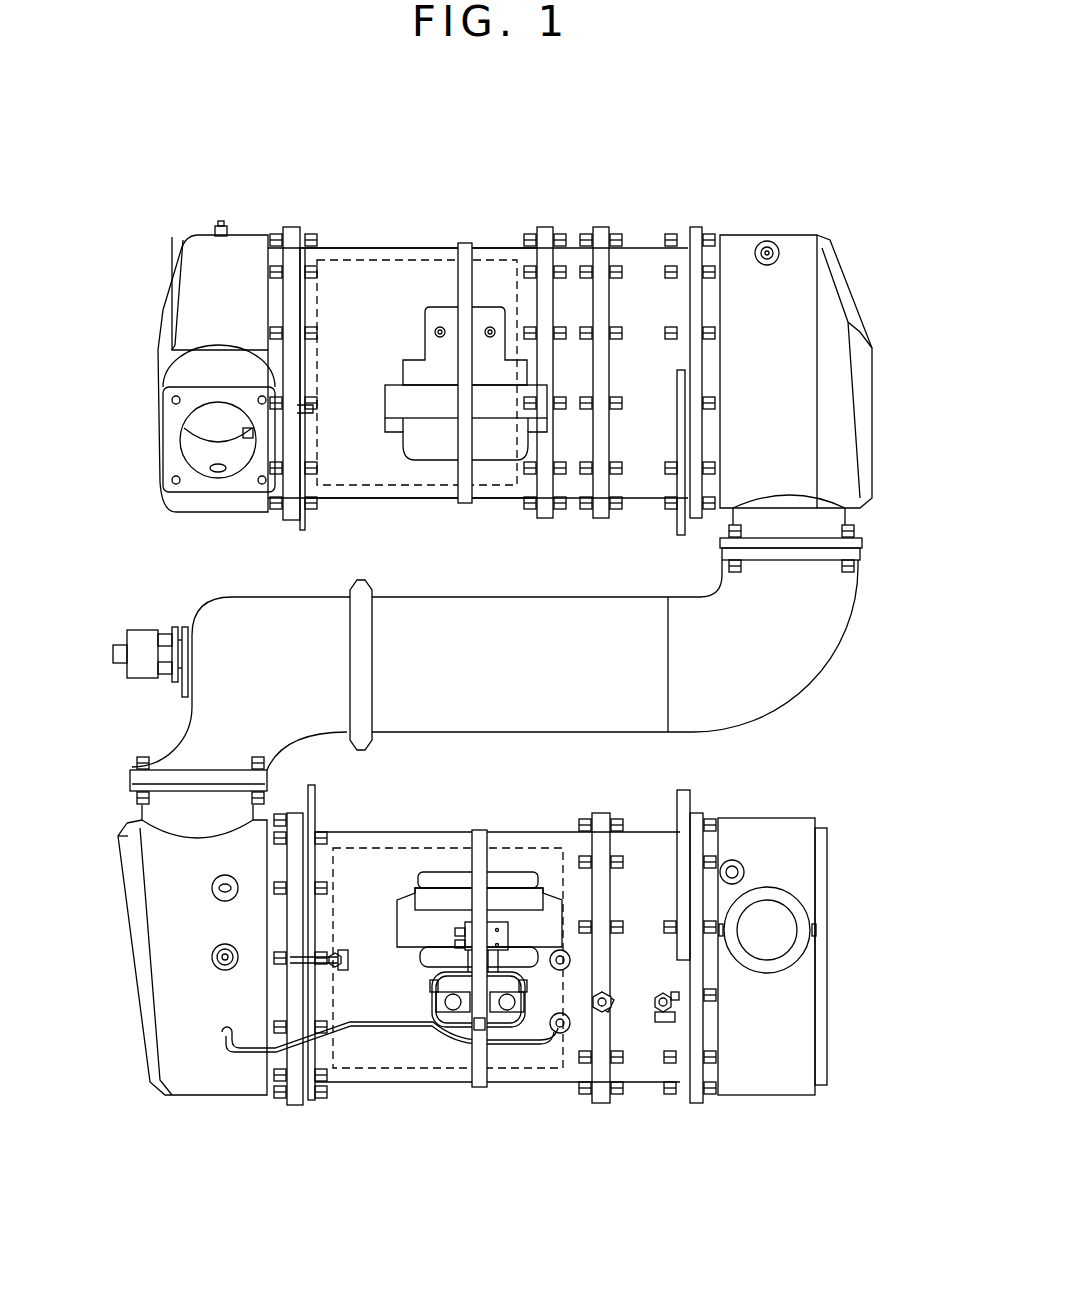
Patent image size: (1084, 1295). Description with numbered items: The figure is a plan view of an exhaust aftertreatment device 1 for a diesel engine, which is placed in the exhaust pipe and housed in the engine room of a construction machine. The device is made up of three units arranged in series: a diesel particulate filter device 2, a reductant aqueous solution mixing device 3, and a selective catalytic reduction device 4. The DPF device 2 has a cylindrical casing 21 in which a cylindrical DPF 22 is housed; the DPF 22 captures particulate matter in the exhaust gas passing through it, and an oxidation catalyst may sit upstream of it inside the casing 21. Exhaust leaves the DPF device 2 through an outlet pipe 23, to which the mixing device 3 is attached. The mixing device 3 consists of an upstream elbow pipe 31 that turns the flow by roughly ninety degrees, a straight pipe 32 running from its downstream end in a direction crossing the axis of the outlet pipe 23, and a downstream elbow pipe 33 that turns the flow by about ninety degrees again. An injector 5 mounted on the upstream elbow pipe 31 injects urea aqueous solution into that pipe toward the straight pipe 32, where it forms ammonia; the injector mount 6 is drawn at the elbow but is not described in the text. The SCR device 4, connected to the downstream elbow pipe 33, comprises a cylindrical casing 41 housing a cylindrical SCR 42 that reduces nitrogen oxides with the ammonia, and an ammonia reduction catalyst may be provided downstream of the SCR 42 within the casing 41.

The exhaust aftertreatment device 1 is at (588, 160).
The diesel particulate filter device 2 is at (584, 1130).
The reductant aqueous solution mixing device 3 is at (534, 580).
The selective catalytic reduction device 4 is at (494, 196).
The injector 5 is at (143, 638).
The injector mounting flange 6 is at (180, 627).
The casing 21 is at (398, 1073).
The DPF 22 is at (525, 1057).
The outlet pipe 23 is at (153, 812).
The upstream elbow pipe 31 is at (277, 607).
The straight pipe 32 is at (452, 607).
The downstream elbow pipe 33 is at (713, 600).
The casing 41 is at (397, 248).
The SCR 42 is at (347, 259).